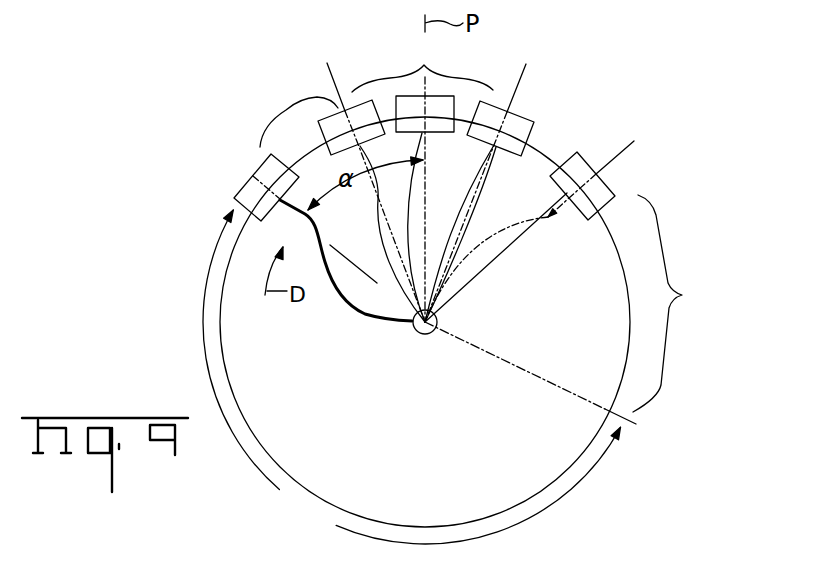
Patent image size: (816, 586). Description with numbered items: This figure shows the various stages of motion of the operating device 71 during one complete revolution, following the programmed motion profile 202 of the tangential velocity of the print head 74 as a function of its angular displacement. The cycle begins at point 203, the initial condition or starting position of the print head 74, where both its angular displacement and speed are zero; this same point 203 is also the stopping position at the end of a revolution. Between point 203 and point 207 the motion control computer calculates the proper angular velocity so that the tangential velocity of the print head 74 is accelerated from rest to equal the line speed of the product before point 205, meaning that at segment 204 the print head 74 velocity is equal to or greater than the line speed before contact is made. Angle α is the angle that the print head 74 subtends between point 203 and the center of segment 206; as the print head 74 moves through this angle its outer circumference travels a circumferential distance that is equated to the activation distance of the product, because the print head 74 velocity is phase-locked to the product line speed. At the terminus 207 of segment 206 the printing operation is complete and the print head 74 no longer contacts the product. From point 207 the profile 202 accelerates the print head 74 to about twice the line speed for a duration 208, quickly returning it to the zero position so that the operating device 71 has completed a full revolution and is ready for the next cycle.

The operating device 71 is at (163, 308).
The print head 74 is at (240, 190).
The profile 202 is at (425, 323).
The point 203 is at (253, 176).
The segment 204 is at (290, 111).
The point 205 is at (323, 63).
The segment 206 is at (422, 179).
The point 207 is at (523, 63).
The duration 208 is at (582, 282).